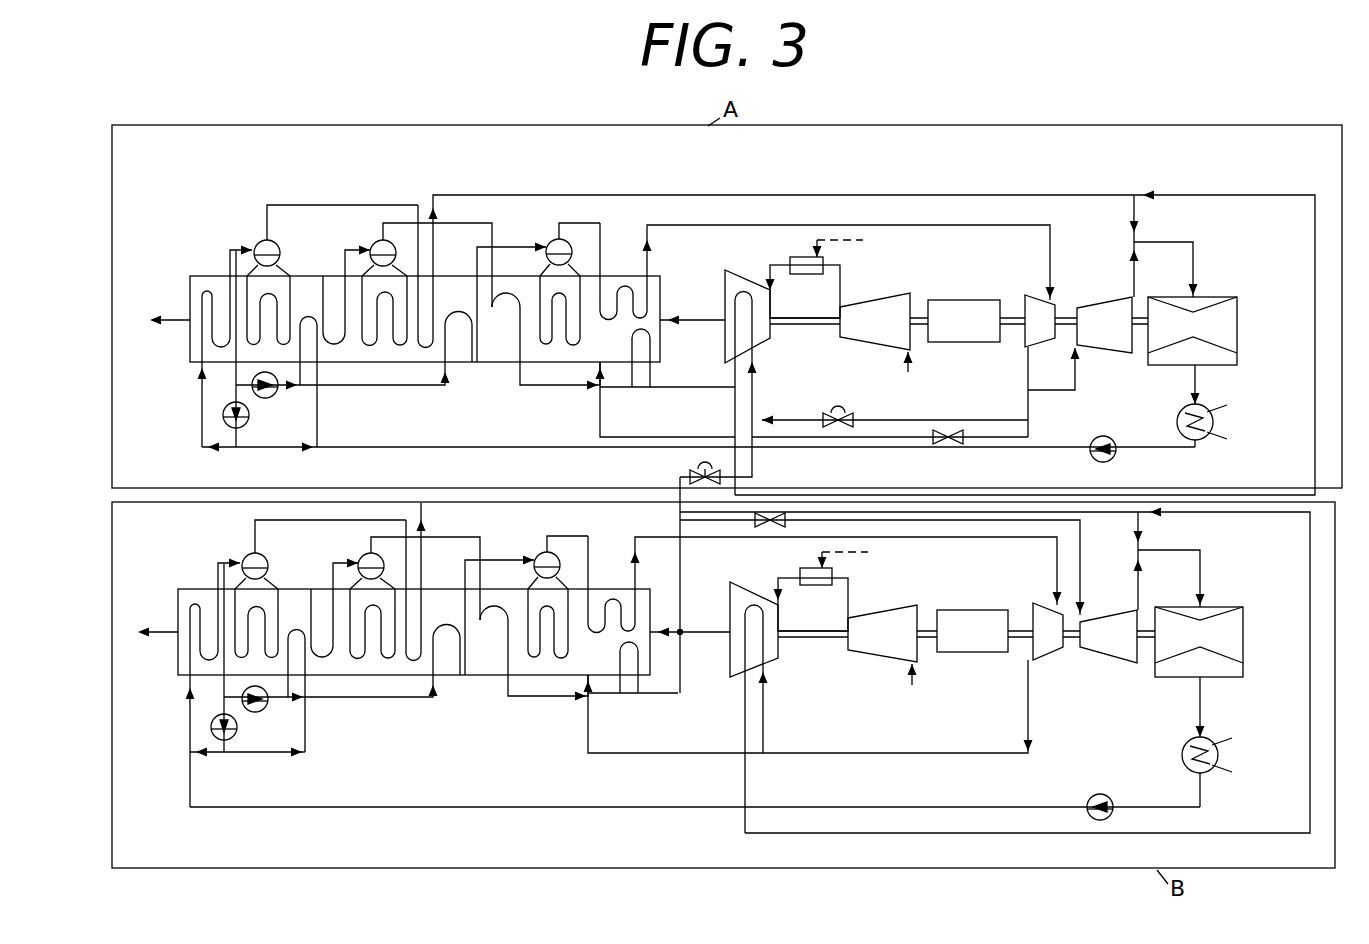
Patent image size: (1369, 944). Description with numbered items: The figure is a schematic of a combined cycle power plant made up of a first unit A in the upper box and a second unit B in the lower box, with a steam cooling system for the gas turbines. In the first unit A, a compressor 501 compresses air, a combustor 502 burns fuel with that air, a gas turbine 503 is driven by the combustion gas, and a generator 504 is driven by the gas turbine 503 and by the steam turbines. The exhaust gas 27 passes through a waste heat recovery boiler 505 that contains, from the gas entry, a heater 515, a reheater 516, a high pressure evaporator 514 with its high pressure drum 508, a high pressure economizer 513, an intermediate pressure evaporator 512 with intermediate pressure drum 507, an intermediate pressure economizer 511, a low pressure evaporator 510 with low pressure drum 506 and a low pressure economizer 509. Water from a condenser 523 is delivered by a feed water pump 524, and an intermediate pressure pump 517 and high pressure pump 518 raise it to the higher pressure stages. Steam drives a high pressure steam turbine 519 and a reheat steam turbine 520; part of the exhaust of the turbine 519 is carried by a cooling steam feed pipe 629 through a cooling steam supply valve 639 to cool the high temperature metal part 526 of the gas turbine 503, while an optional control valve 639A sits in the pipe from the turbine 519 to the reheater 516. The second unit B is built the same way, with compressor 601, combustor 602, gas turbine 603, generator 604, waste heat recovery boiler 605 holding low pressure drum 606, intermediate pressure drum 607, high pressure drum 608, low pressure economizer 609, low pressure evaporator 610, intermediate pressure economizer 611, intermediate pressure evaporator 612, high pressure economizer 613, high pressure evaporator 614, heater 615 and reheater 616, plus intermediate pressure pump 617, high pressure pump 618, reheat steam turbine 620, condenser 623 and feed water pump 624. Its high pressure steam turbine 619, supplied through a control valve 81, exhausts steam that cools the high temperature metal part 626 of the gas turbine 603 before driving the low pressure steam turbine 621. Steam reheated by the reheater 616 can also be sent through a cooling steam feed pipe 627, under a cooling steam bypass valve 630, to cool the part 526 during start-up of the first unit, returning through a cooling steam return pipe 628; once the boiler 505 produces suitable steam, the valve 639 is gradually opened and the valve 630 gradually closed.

The exhaust gas 27 is at (698, 321).
The control valve 81 is at (790, 525).
The compressor 501 is at (883, 306).
The combustor 502 is at (800, 257).
The gas turbine 503 is at (760, 334).
The generator 504 is at (963, 316).
The waste heat recovery boiler 505 is at (215, 292).
The low pressure drum 506 is at (266, 239).
The intermediate pressure drum 507 is at (383, 239).
The high pressure drum 508 is at (559, 238).
The low pressure economizer 509 is at (205, 302).
The low pressure evaporator 510 is at (263, 302).
The intermediate pressure economizer 511 is at (336, 342).
The intermediate pressure evaporator 512 is at (401, 345).
The high pressure economizer 513 is at (473, 338).
The high pressure evaporator 514 is at (557, 338).
The heater 515 is at (624, 292).
The reheater 516 is at (631, 363).
The intermediate pressure pump 517 is at (223, 414).
The high pressure pump 518 is at (267, 398).
The high pressure steam turbine 519 is at (1032, 336).
The reheat steam turbine 520 is at (1213, 320).
The condenser 523 is at (1226, 418).
The feed water pump 524 is at (1117, 458).
The high temperature metal part 526 is at (743, 300).
The cooling steam feed pipe 627 is at (753, 464).
The cooling steam return pipe 628 is at (931, 470).
The cooling steam feed pipe 629 is at (911, 426).
The cooling steam bypass valve 630 is at (700, 464).
The cooling steam supply valve 639 is at (840, 411).
The control valve 639A is at (965, 440).
The compressor 601 is at (882, 633).
The combustor 602 is at (832, 575).
The gas turbine 603 is at (770, 645).
The generator 604 is at (972, 632).
The waste heat recovery boiler 605 is at (202, 603).
The low pressure drum 606 is at (253, 553).
The intermediate pressure drum 607 is at (376, 553).
The high pressure drum 608 is at (545, 552).
The low pressure economizer 609 is at (196, 618).
The low pressure evaporator 610 is at (252, 618).
The intermediate pressure economizer 611 is at (322, 655).
The intermediate pressure evaporator 612 is at (373, 645).
The high pressure economizer 613 is at (460, 650).
The high pressure evaporator 614 is at (540, 650).
The heater 615 is at (606, 604).
The reheater 616 is at (619, 676).
The intermediate pressure pump 617 is at (212, 732).
The high pressure pump 618 is at (256, 713).
The high pressure steam turbine 619 is at (1045, 640).
The reheat steam turbine 620 is at (1110, 652).
The low pressure steam turbine 621 is at (1222, 635).
The condenser 623 is at (1230, 747).
The feed water pump 624 is at (1108, 800).
The high temperature metal part 626 is at (757, 612).